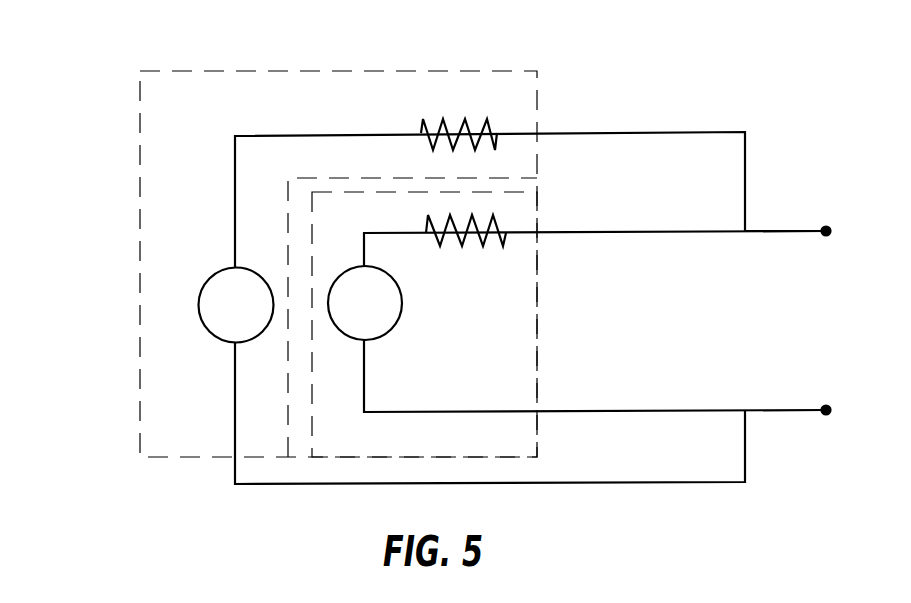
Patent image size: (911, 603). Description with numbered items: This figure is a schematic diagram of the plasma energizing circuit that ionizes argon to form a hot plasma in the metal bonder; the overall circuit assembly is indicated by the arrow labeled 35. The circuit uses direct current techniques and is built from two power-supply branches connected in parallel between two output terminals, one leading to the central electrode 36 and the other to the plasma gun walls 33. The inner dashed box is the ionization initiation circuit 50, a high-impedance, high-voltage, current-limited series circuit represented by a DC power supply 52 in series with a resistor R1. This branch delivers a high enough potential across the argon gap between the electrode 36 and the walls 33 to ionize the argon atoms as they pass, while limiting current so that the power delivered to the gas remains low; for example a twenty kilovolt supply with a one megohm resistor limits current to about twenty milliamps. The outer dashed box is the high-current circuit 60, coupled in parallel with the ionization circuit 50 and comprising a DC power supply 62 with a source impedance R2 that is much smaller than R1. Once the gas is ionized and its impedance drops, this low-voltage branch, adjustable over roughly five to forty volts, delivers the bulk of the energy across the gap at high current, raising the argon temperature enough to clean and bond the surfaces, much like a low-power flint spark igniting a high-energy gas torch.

The sensor circuit 35 is at (104, 70).
The high-current circuit 60 is at (140, 197).
The DC power supply 62 is at (217, 336).
The ionization initiation circuit 50 is at (538, 290).
The DC power supply 52 is at (387, 333).
The resistor R1 is at (466, 246).
The source impedance R2 is at (459, 116).
The central electrode 36 is at (817, 215).
The plasma gun walls 33 is at (827, 393).